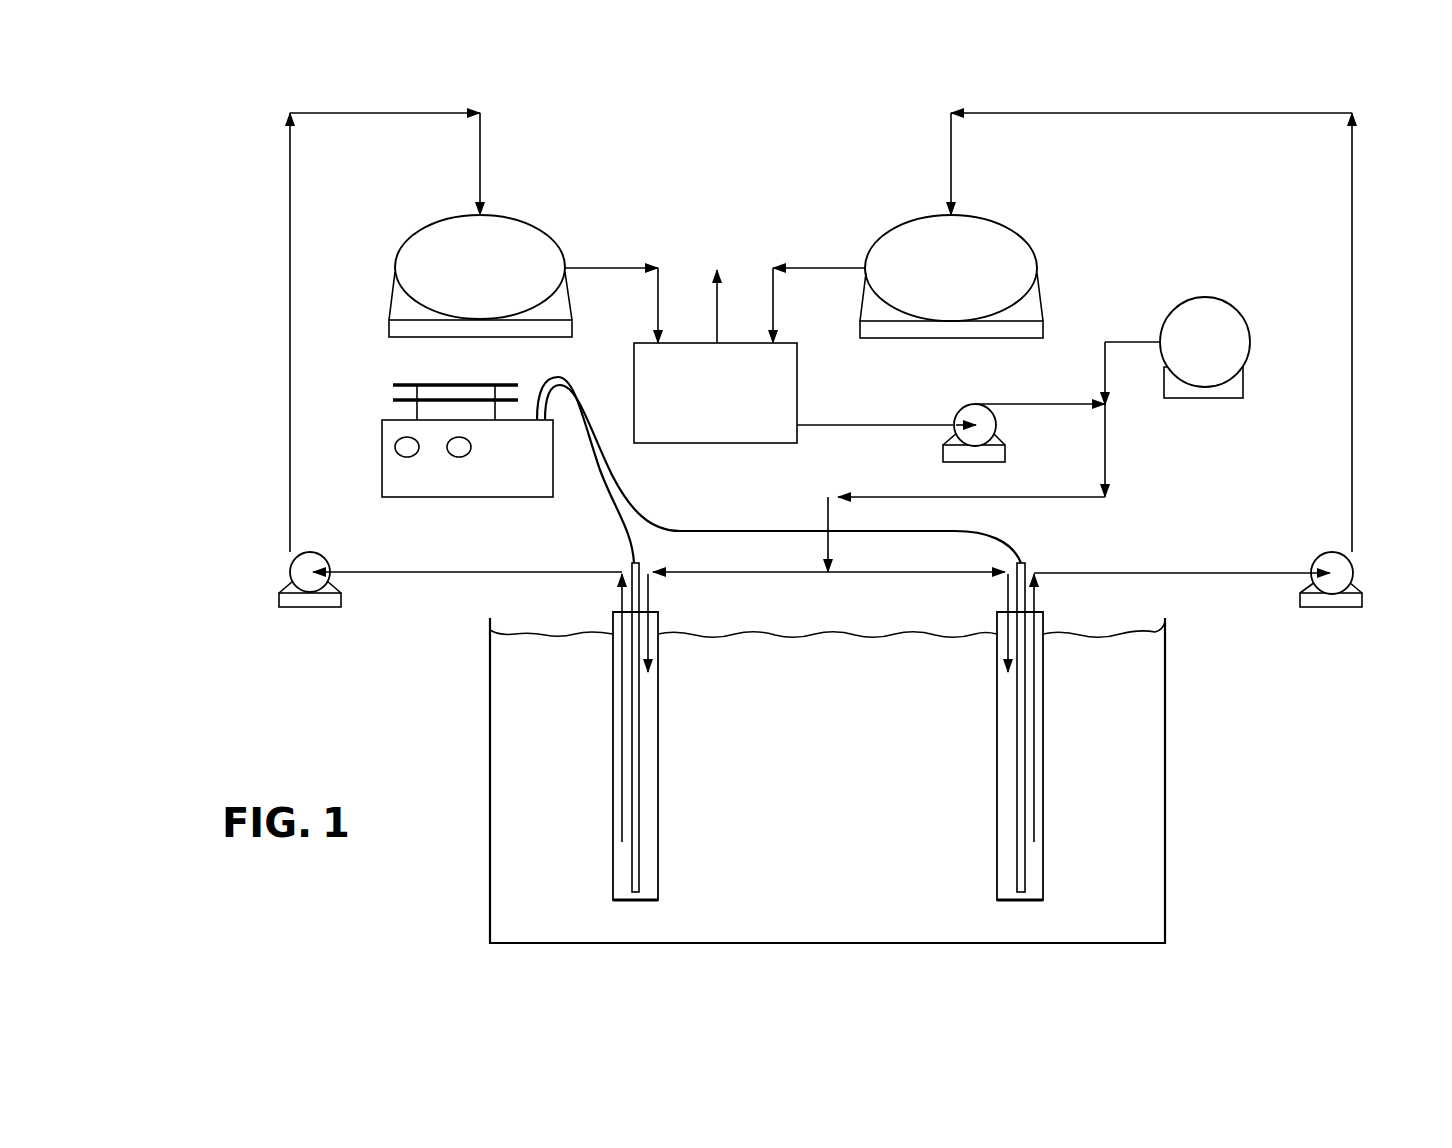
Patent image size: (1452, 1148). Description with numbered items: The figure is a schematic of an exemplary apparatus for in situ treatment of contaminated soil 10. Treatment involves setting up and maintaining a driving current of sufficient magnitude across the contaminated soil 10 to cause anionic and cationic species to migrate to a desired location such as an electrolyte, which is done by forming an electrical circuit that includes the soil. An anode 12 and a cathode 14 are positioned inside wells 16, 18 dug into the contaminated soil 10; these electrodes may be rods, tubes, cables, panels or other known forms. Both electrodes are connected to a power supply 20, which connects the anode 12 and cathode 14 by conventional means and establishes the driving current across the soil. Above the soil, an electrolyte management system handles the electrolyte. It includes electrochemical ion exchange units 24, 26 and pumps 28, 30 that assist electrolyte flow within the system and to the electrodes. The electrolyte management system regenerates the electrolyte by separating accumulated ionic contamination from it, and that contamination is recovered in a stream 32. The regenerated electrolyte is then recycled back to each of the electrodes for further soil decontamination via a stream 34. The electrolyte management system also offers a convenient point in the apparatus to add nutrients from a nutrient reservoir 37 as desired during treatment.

The contaminated soil 10 is at (1130, 728).
The anode 12 is at (640, 866).
The cathode 14 is at (1017, 850).
The well 16 is at (659, 762).
The well 18 is at (997, 752).
The power supply 20 is at (378, 430).
The electrochemical ion exchange unit 24 is at (537, 216).
The electrochemical ion exchange unit 26 is at (1008, 218).
The pump 28 is at (306, 562).
The pump 30 is at (1333, 556).
The stream 32 is at (717, 326).
The stream 34 is at (1022, 497).
The nutrient reservoir 37 is at (1241, 302).